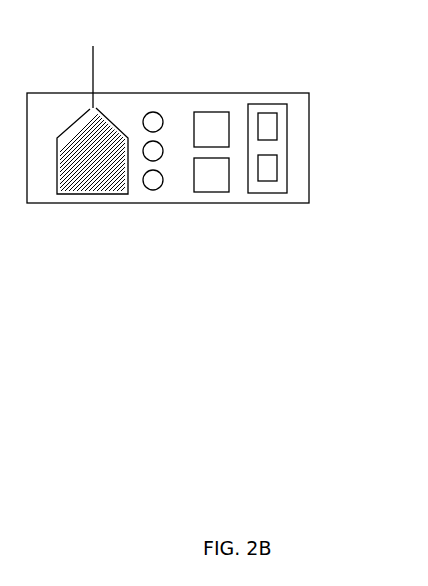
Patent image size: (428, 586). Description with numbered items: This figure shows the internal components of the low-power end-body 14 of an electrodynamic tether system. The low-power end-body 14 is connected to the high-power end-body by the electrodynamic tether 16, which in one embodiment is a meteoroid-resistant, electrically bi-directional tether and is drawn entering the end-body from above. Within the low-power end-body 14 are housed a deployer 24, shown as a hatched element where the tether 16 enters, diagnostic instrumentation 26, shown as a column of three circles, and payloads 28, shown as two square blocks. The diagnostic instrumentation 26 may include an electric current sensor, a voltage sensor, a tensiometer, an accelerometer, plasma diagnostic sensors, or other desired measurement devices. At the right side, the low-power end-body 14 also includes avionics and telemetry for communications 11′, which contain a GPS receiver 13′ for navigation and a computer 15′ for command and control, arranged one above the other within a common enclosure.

The low-power end-body 14 is at (318, 151).
The electrodynamic tether 16 is at (97, 58).
The deployer 24 is at (93, 194).
The diagnostic instrumentation 26 is at (153, 190).
The payloads 28 is at (212, 192).
The avionics and telemetry for communications 11′ is at (248, 106).
The GPS receiver 13′ is at (267, 113).
The computer 15′ is at (267, 181).